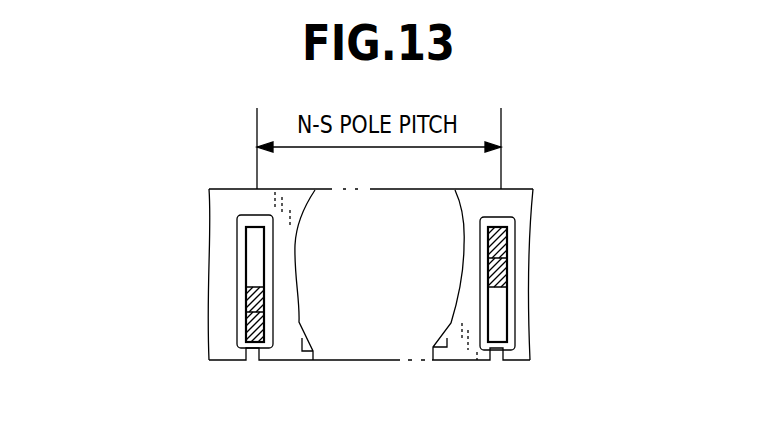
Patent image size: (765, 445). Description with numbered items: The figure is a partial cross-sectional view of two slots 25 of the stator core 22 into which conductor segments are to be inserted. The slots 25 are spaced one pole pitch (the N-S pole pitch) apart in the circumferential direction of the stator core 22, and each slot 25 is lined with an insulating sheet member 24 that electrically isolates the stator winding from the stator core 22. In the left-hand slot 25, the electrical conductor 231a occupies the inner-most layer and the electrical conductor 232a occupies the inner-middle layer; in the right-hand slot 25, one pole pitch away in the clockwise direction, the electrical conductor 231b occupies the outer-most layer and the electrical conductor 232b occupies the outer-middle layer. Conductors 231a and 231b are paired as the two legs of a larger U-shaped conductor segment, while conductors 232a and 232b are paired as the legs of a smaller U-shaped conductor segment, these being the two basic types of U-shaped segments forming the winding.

The stator core 22 is at (519, 214).
The insulating sheet member 24 is at (237, 242).
The slot 25 is at (247, 264).
The electrical conductor 231a is at (243, 325).
The electrical conductor 231b is at (510, 245).
The electrical conductor 232a is at (253, 297).
The electrical conductor 232b is at (508, 285).